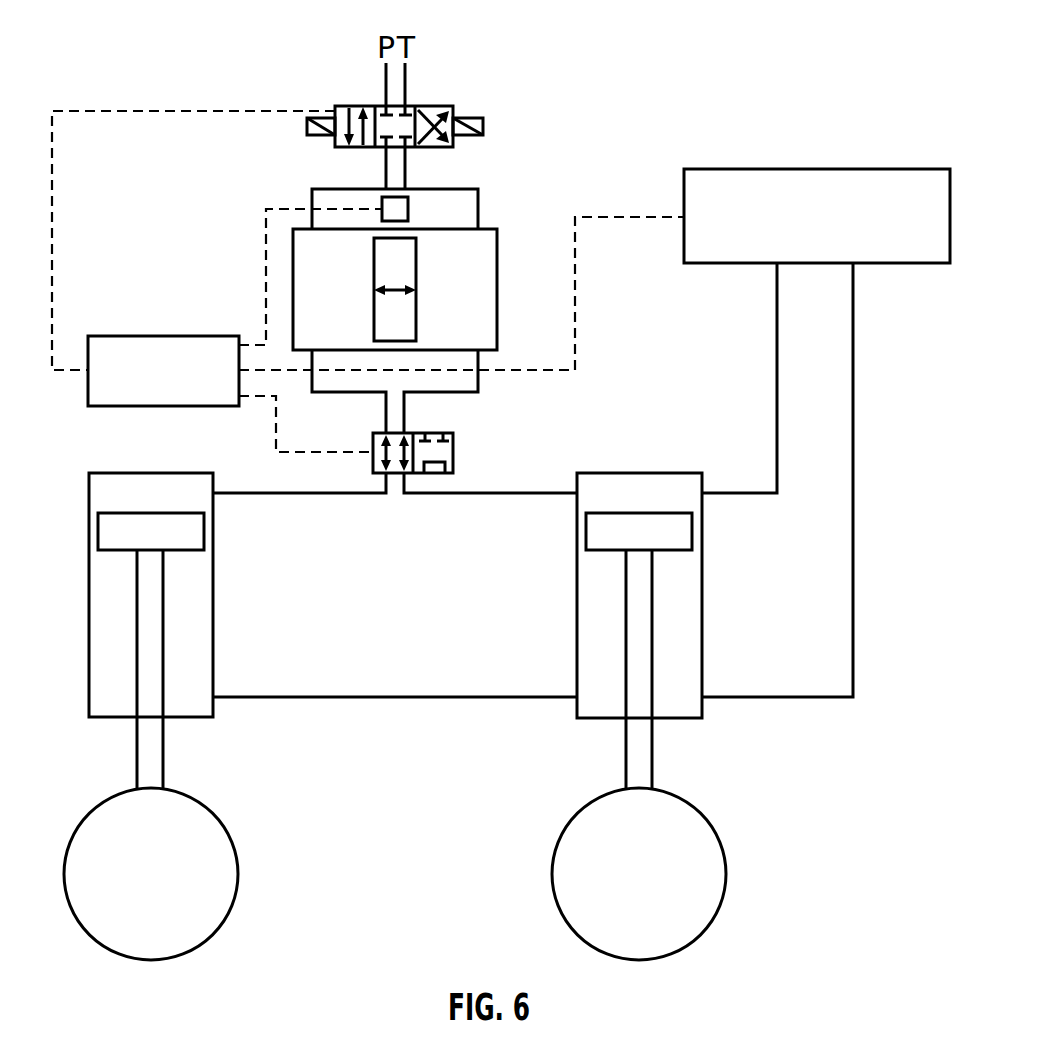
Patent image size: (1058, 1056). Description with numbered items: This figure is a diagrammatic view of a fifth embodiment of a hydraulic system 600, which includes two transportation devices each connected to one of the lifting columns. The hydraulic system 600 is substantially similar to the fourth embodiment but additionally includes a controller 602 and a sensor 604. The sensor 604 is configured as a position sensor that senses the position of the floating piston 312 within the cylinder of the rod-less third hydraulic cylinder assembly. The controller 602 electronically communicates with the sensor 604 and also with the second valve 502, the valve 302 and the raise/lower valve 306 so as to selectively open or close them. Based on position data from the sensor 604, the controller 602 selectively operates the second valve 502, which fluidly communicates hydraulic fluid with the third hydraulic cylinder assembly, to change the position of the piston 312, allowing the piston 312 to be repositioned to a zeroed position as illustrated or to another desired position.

The hydraulic system 600 is at (186, 88).
The second valve 502 is at (348, 88).
The sensor 604 is at (382, 205).
The floating piston 312 is at (406, 313).
The controller 602 is at (158, 336).
The valve 302 is at (470, 432).
The raise/lower valve 306 is at (877, 169).